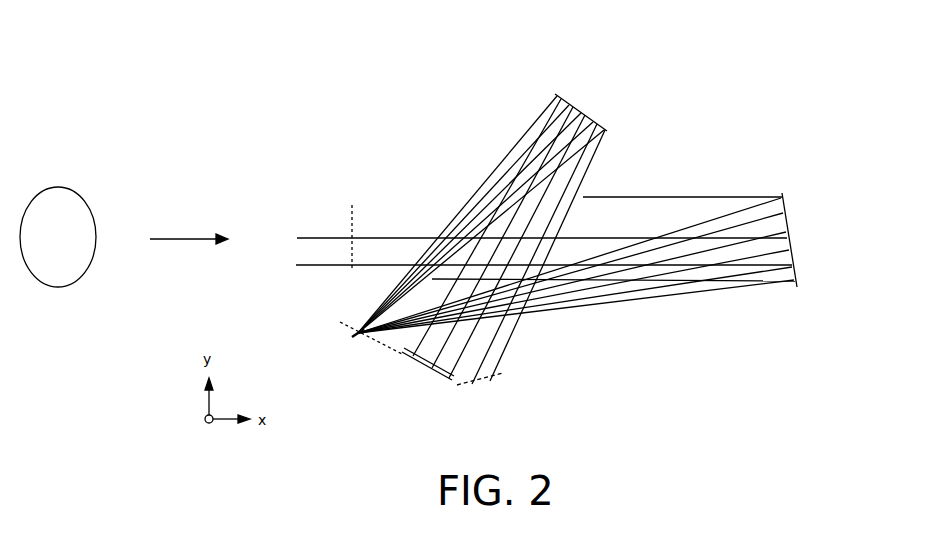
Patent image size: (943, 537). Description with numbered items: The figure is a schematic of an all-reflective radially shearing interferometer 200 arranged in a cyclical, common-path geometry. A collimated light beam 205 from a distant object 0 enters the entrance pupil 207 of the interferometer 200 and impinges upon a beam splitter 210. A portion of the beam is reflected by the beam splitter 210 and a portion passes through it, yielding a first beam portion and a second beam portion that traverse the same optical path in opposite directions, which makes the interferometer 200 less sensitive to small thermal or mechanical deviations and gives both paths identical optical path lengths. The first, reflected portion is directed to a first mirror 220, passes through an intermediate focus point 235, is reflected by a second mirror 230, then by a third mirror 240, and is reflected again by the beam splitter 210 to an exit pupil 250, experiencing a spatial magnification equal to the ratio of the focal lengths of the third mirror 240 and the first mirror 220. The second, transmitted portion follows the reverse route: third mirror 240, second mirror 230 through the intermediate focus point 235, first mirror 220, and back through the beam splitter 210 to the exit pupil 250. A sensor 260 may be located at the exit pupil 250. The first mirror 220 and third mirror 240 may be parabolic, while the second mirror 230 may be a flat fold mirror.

The all-reflective radially shearing interferometer 200 is at (268, 86).
The distant object 0 is at (58, 187).
The collimated light beam 205 is at (190, 239).
The entrance pupil 207 is at (350, 192).
The first mirror 220 is at (578, 104).
The beam splitter 210 is at (600, 180).
The intermediate focus point 235 is at (370, 314).
The second mirror 230 is at (356, 338).
The third mirror 240 is at (795, 231).
The sensor 260 is at (418, 367).
The exit pupil 250 is at (498, 383).